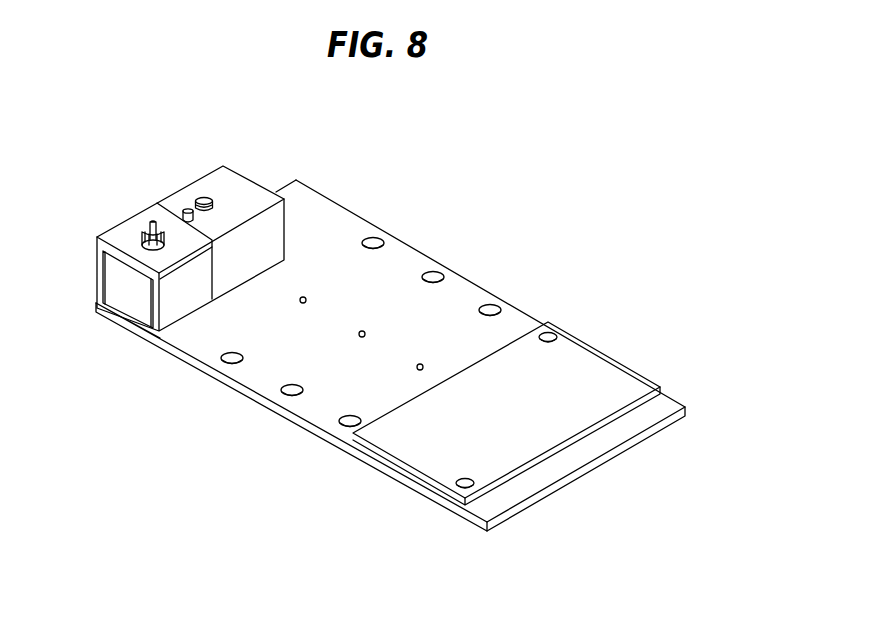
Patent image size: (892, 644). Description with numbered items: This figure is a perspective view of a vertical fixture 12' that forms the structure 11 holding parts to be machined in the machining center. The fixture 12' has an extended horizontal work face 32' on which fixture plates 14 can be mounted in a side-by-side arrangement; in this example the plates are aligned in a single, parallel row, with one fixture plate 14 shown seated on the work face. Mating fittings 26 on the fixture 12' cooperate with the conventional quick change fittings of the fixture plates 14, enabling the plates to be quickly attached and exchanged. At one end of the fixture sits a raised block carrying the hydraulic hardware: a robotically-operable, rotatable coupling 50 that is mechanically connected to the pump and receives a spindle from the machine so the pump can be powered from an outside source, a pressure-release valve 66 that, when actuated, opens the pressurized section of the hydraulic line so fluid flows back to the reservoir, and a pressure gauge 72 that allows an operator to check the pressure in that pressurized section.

The structure 11 is at (238, 401).
The fixture 12' is at (390, 343).
The fixture plates 14 is at (593, 365).
The mating fittings 26 is at (434, 267).
The horizontal work face 32' is at (190, 241).
The rotatable coupling 50 is at (137, 238).
The pressure-release valve 66 is at (188, 208).
The pressure gauge 72 is at (204, 197).